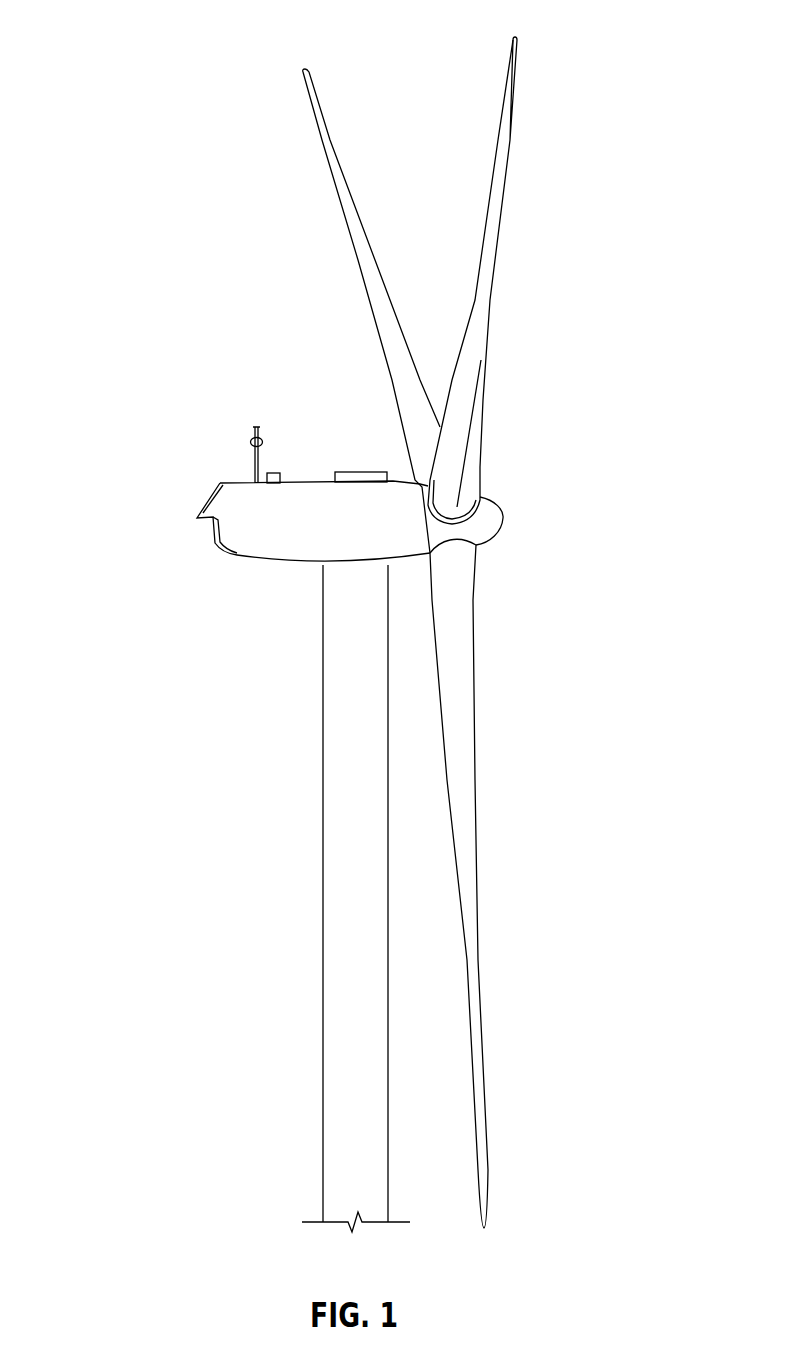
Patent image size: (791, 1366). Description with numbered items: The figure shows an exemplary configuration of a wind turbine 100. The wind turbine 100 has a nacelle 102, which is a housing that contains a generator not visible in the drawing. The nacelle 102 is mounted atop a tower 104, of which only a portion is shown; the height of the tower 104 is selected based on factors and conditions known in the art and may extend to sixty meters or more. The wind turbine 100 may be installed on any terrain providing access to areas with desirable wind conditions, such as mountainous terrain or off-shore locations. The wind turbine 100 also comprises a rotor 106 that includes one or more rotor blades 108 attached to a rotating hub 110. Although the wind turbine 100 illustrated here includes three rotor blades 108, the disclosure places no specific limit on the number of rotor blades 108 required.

The wind turbine 100 is at (147, 38).
The nacelle 102 is at (250, 556).
The tower 104 is at (323, 830).
The rotor 106 is at (560, 308).
The rotor blades 108 is at (320, 110).
The rotating hub 110 is at (500, 517).